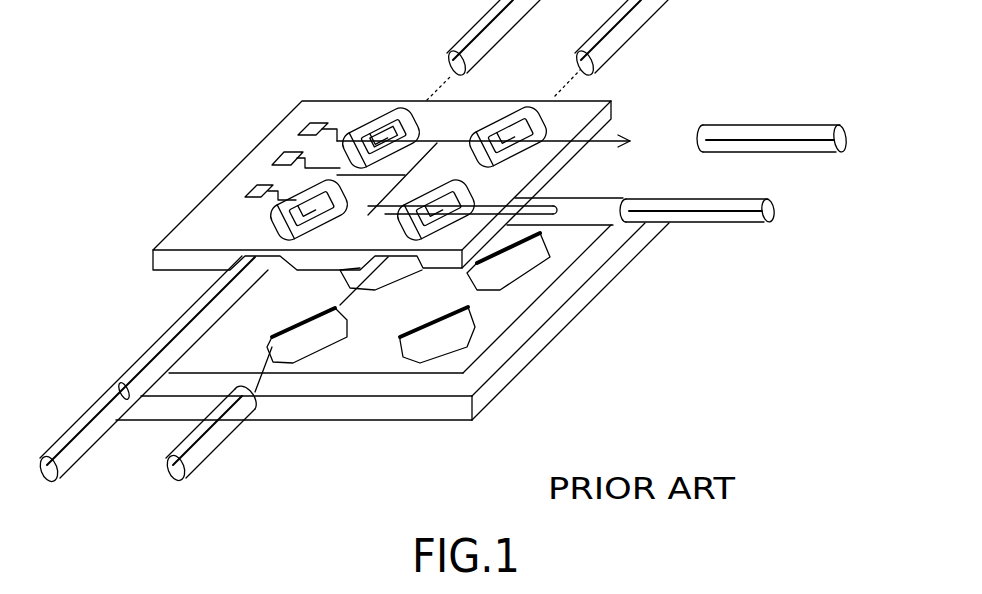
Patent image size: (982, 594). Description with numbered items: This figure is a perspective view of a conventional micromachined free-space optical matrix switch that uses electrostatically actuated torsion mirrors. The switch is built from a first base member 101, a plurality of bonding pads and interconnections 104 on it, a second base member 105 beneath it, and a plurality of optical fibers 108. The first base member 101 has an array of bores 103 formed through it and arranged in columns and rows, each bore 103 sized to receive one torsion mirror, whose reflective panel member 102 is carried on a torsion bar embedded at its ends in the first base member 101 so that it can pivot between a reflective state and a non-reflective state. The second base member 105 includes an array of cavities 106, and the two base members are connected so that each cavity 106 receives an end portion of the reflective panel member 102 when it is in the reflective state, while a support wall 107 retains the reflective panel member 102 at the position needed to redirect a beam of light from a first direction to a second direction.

The first base member 101 is at (208, 240).
The reflective panel member 102 is at (360, 133).
The bores 103 is at (407, 110).
The bonding pads and interconnections 104 is at (256, 188).
The second base member 105 is at (377, 405).
The cavities 106 is at (470, 356).
The support wall 107 is at (272, 334).
The optical fibers 108 is at (92, 427).